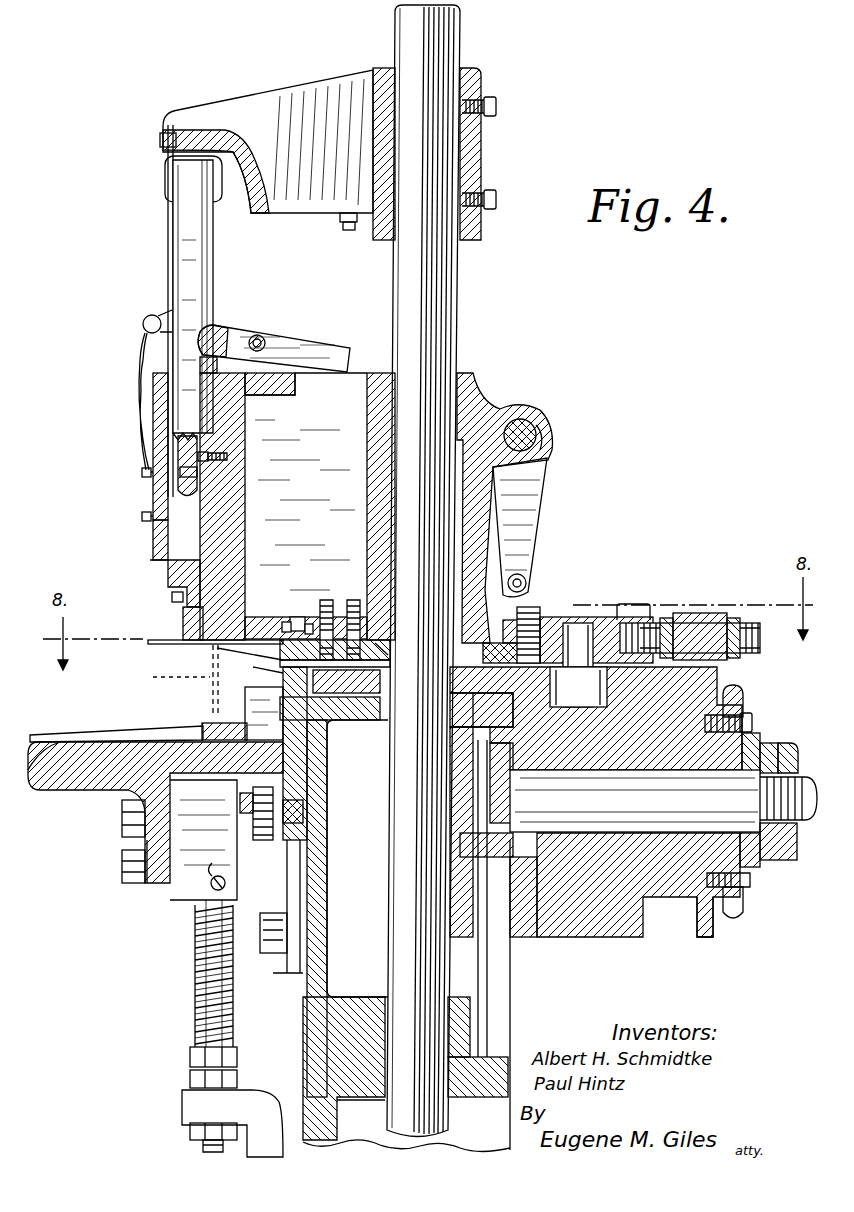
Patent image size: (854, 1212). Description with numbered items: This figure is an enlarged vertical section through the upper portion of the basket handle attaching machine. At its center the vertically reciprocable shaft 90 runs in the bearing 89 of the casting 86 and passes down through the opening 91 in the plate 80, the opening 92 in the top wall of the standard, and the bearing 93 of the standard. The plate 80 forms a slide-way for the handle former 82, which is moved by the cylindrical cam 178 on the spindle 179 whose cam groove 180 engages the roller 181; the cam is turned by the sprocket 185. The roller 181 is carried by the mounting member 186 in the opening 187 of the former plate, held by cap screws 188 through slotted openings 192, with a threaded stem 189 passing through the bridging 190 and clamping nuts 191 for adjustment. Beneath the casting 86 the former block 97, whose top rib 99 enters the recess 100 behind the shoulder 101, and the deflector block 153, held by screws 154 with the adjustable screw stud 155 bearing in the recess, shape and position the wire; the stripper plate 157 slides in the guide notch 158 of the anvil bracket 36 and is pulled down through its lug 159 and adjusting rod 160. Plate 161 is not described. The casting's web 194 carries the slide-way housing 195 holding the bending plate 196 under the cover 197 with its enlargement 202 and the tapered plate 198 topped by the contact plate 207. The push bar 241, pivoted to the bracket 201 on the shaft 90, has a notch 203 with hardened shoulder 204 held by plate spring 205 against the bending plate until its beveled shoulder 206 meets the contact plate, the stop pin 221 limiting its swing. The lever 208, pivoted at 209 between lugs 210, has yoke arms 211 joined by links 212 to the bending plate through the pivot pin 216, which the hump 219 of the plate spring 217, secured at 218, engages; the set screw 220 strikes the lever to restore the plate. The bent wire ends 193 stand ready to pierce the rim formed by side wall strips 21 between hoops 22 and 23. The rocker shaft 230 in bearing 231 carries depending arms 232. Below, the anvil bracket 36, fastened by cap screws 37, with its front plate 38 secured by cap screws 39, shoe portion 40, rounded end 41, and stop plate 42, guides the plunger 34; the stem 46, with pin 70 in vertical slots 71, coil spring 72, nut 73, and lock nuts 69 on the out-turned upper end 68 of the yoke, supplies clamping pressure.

The vertically reciprocable shaft 90 is at (452, 305).
The bracket 201 is at (300, 92).
The set screw 220 is at (340, 226).
The plate spring 205 is at (168, 238).
The push bar 241 is at (200, 285).
The beveled shoulder 206 is at (205, 318).
The tapered plate 198 is at (205, 500).
The hardened shoulder 204 is at (210, 478).
The stop pin 221 is at (225, 452).
The slide-way housing 195 is at (215, 461).
The pivot pin 216 is at (146, 316).
The yoke arms 211 is at (167, 305).
The links 212 is at (147, 335).
The hump 219 is at (147, 342).
The plate spring 217 is at (140, 385).
The securing point 218 is at (142, 512).
The lever 208 is at (342, 356).
The pivot 209 is at (264, 340).
The lugs 210 is at (268, 345).
The contact plate 207 is at (215, 357).
The bearing 89 is at (370, 488).
The web 194 is at (307, 495).
The enlargement 202 is at (155, 400).
The notch 203 is at (155, 538).
The bending plate 196 is at (152, 565).
The cover 197 is at (184, 622).
The former block 97 is at (253, 602).
The shoulder 101 is at (267, 616).
The top rib 99 is at (286, 620).
The recess 100 is at (303, 620).
The screws 154 is at (346, 606).
The adjustable screw stud 155 is at (340, 618).
The plate 161 is at (348, 653).
The deflector block 153 is at (383, 642).
The downturned wire ends 193 is at (161, 676).
The outer hoop 23 is at (229, 722).
The opening 91 is at (378, 690).
The guide notch 158 is at (318, 772).
The opening 92 is at (378, 735).
The bearing 93 is at (348, 1000).
The anvil bracket 36 is at (287, 975).
The cap screws 37 is at (273, 950).
The stripper plate 157 is at (305, 828).
The threaded adjusting rod 160 is at (273, 870).
The lug 159 is at (240, 797).
The shoe portion 40 is at (85, 790).
The rounded end 41 is at (55, 746).
The side wall strips 21 is at (125, 741).
The inner hoop 22 is at (235, 734).
The stop plate 42 is at (264, 713).
The cap screws 39 is at (122, 872).
The plate 38 is at (150, 892).
The plunger 34 is at (190, 890).
The vertical slots 71 is at (225, 868).
The pin 70 is at (212, 893).
The coil spring 72 is at (195, 968).
The stem 46 is at (210, 1004).
The nut 73 is at (190, 1057).
The lock nuts 69 is at (240, 1080).
The out-turned upper end 68 is at (185, 1106).
The casting 86 is at (478, 370).
The rocker shaft 230 is at (543, 416).
The bearing 231 is at (550, 440).
The depending arms 232 is at (532, 508).
The handle former 82 is at (496, 641).
The openings 192 is at (545, 625).
The cap screws 188 is at (545, 607).
The mounting member 186 is at (626, 622).
The opening 187 is at (665, 620).
The bridging 190 is at (722, 613).
The clamping nuts 191 is at (690, 618).
The threaded stem 189 is at (760, 645).
The roller 181 is at (718, 678).
The plate 80 is at (492, 700).
The spindle 179 is at (663, 801).
The cylindrical cam 178 is at (592, 935).
The cam groove 180 is at (685, 920).
The sprocket 185 is at (742, 898).